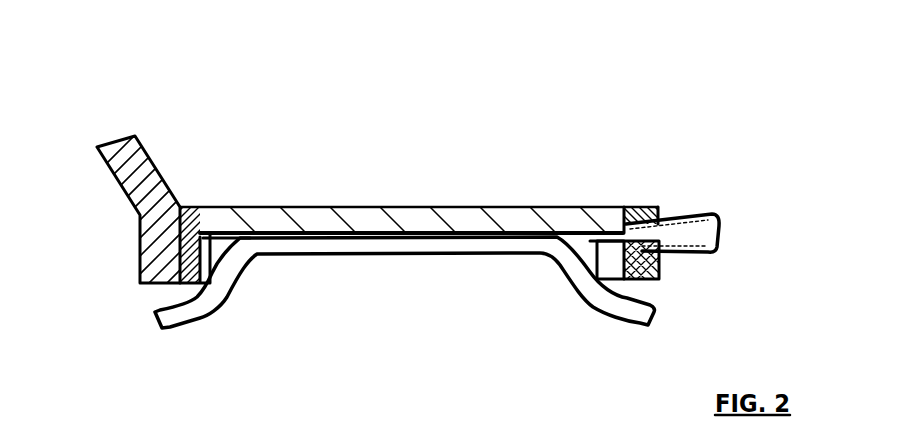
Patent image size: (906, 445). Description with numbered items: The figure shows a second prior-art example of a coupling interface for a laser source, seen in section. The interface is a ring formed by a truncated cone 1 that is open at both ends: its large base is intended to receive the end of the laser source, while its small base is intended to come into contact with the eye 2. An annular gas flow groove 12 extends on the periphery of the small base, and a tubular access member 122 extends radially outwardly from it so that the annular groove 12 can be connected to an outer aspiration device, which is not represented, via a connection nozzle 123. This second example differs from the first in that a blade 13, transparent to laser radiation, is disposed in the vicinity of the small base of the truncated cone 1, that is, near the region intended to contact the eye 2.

The truncated cone 1 is at (157, 157).
The eye 2 is at (160, 313).
The annular gas flow groove 12 is at (218, 260).
The blade 13 is at (392, 207).
The tubular access member 122 is at (663, 278).
The connection nozzle 123 is at (697, 217).